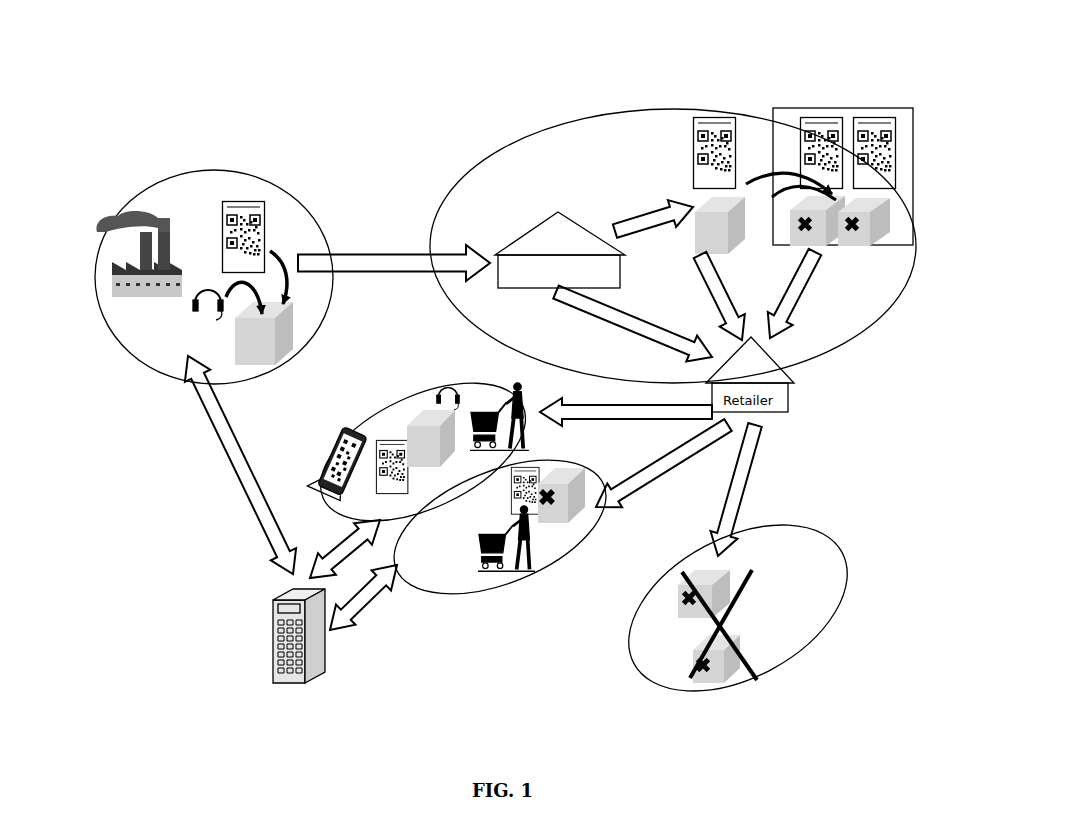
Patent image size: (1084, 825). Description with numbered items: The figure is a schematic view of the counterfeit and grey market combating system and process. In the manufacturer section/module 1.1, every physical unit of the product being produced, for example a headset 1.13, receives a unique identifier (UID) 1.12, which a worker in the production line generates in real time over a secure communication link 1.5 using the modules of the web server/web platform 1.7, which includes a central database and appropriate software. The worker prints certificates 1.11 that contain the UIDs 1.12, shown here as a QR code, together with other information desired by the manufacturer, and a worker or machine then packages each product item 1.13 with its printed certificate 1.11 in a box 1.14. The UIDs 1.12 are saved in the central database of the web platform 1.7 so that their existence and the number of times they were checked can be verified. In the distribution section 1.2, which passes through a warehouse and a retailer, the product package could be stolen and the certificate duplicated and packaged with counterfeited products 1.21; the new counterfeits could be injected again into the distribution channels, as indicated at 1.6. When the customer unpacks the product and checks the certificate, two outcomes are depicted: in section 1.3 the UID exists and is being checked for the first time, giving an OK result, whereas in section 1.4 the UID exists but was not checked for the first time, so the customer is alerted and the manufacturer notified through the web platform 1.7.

The manufacturer section/module 1.1 is at (213, 165).
The certificate 1.11 is at (268, 225).
The unique identifier (UID) 1.12 is at (260, 233).
The headset (product) 1.13 is at (214, 296).
The box 1.14 is at (282, 354).
The distribution section 1.2 is at (668, 105).
The counterfeited products with duplicated certificates 1.21 is at (875, 254).
The first-check section/module 1.3 is at (409, 392).
The repeat-check section 1.4 is at (601, 466).
The secure communication link 1.5 is at (221, 493).
The re-injected counterfeits section 1.6 is at (775, 594).
The web server/web platform 1.7 is at (249, 653).